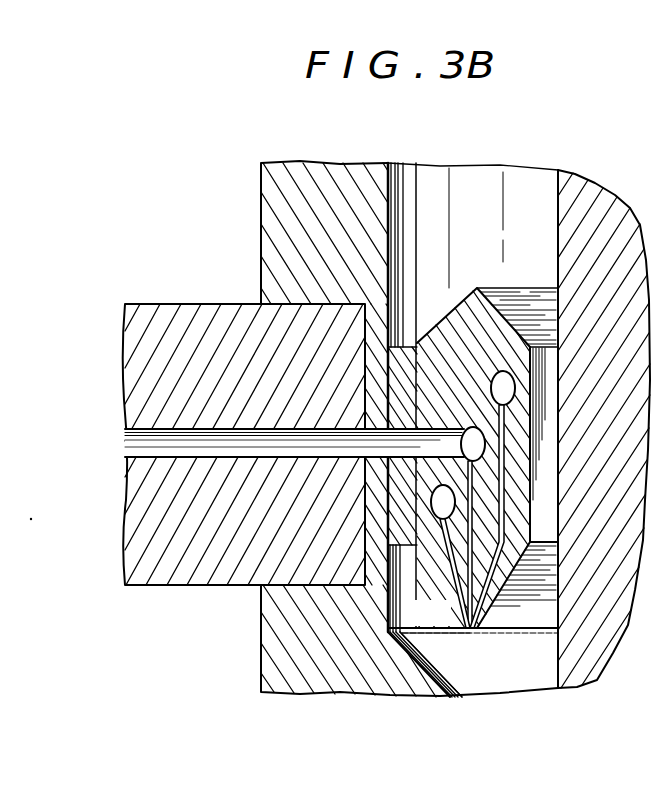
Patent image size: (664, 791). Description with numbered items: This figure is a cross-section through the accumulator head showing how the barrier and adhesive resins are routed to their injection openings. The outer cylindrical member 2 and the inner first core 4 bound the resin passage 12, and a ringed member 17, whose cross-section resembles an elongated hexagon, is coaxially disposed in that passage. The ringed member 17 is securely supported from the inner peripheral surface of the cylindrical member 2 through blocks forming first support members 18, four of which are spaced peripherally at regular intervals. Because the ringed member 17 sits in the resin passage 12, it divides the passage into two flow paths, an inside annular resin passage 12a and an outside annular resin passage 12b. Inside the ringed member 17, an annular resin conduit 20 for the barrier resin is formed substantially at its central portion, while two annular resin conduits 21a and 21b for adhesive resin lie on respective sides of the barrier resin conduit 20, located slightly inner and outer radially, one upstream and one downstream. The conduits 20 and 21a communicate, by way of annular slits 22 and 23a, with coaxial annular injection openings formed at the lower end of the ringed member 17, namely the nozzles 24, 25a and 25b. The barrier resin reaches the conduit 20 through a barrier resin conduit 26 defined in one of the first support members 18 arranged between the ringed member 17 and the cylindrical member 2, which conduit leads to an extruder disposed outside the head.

The cylindrical member 2 is at (262, 237).
The first core 4 is at (622, 220).
The resin passage 12 is at (483, 236).
The inside annular resin passage 12a is at (528, 625).
The outside annular resin passage 12b is at (447, 620).
The ringed member 17 is at (537, 382).
The first support members 18 is at (417, 340).
The annular resin conduit for barrier resin 20 is at (468, 430).
The annular resin conduit for adhesive resin 21a is at (493, 377).
The annular resin conduit for adhesive resin 21b is at (432, 503).
The annular slit 22 is at (474, 533).
The annular slit 23a is at (502, 472).
The nozzle 24 is at (442, 633).
The nozzle 25a is at (472, 632).
The nozzle 25b is at (437, 694).
The barrier resin conduit 26 is at (429, 441).